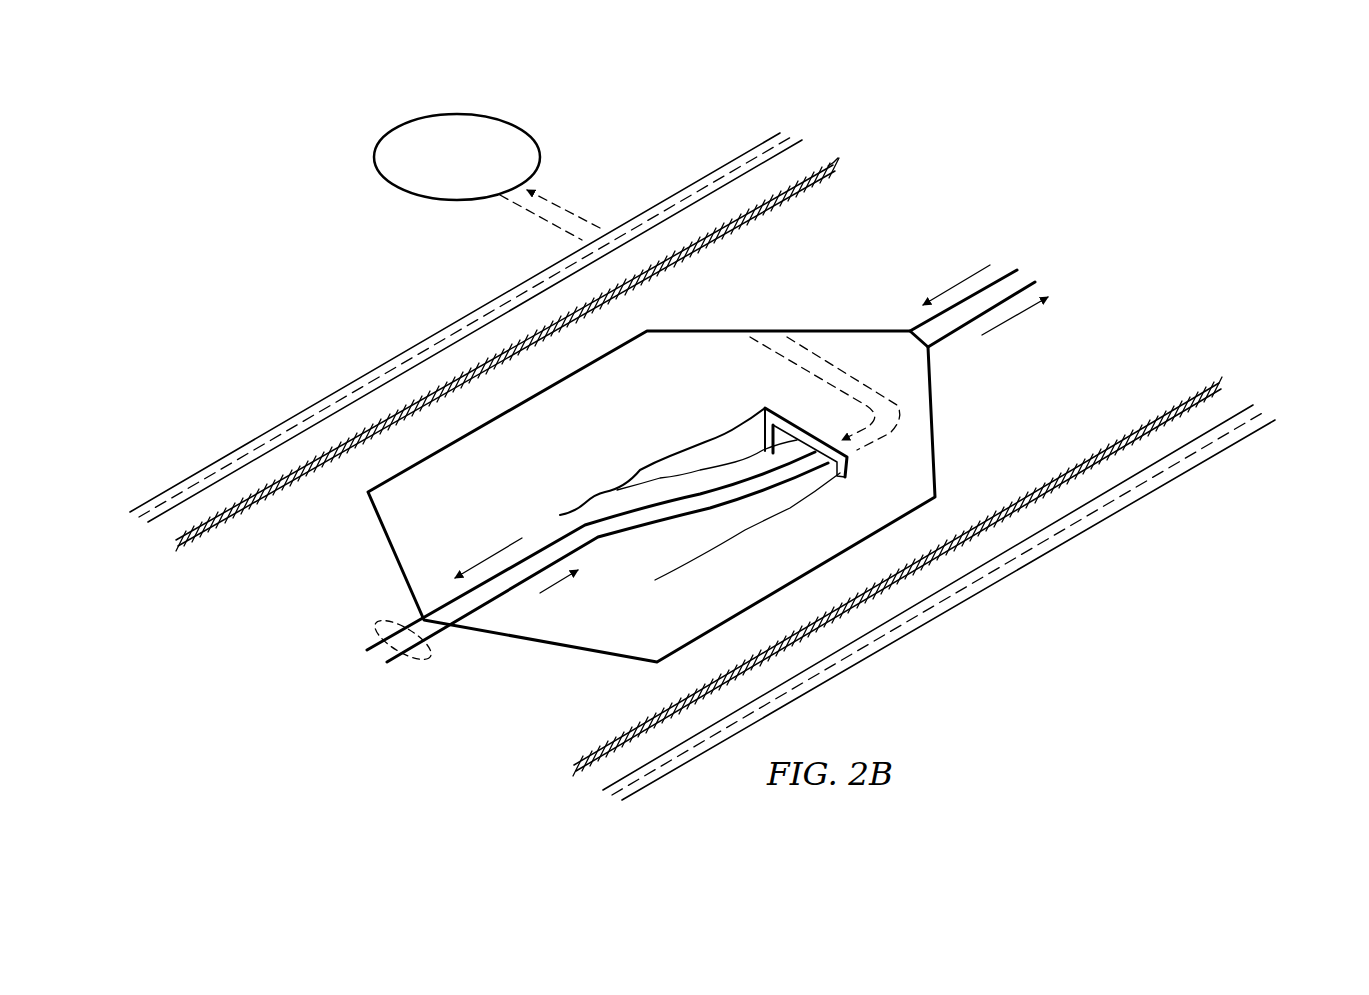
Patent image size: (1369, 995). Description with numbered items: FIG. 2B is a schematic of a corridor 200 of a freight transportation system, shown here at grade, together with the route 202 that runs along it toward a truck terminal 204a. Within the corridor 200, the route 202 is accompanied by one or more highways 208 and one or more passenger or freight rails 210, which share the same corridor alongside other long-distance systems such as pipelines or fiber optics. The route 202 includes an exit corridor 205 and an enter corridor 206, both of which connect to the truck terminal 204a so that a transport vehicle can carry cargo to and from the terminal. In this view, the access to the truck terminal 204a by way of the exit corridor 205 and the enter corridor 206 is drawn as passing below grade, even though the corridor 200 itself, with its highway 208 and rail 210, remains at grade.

The corridor 200 is at (950, 160).
The route 202 is at (427, 658).
The truck terminal 204a is at (378, 153).
The exit corridor 205 is at (593, 538).
The enter corridor 206 is at (555, 542).
The highway 208 is at (730, 162).
The passenger or freight rail 210 is at (190, 544).